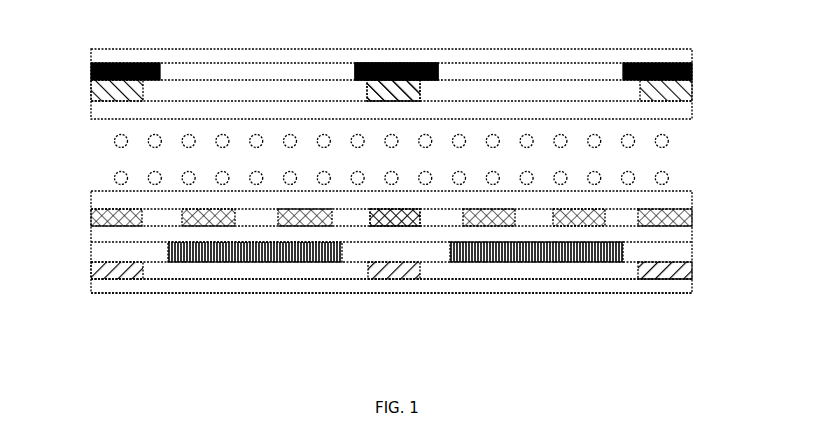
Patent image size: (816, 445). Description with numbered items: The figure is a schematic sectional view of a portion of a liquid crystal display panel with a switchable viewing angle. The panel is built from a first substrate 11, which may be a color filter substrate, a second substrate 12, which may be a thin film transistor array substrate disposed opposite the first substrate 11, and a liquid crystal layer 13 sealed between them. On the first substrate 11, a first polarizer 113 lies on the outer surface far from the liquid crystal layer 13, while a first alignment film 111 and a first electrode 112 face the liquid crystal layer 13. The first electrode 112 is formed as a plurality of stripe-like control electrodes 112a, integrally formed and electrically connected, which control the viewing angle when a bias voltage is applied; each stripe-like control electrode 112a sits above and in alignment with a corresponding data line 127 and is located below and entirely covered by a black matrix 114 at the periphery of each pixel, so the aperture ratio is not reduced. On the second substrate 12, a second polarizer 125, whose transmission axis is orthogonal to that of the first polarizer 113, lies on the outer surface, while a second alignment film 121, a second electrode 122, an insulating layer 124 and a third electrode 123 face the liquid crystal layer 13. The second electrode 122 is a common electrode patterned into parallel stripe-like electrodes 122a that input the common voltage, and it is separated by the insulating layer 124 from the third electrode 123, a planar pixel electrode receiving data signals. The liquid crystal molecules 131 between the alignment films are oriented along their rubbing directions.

The first substrate 11 is at (82, 47).
The second substrate 12 is at (82, 186).
The liquid crystal layer 13 is at (82, 126).
The first alignment film 111 is at (695, 110).
The first electrode 112 is at (692, 91).
The stripe-like control electrode 112a is at (417, 63).
The first polarizer 113 is at (687, 57).
The black matrix 114 is at (691, 72).
The second alignment film 121 is at (692, 203).
The second electrode 122 is at (692, 217).
The stripe-like electrode 122a is at (417, 226).
The third electrode 123 is at (260, 265).
The insulating layer 124 is at (692, 237).
The second polarizer 125 is at (692, 285).
The data line 127 is at (130, 280).
The liquid crystal molecule 131 is at (668, 140).